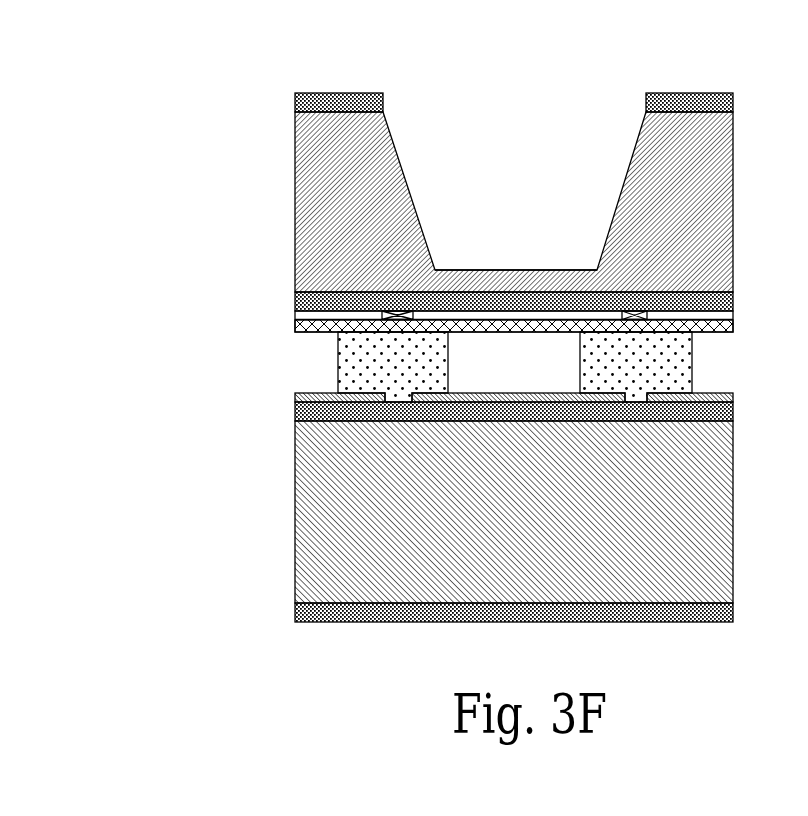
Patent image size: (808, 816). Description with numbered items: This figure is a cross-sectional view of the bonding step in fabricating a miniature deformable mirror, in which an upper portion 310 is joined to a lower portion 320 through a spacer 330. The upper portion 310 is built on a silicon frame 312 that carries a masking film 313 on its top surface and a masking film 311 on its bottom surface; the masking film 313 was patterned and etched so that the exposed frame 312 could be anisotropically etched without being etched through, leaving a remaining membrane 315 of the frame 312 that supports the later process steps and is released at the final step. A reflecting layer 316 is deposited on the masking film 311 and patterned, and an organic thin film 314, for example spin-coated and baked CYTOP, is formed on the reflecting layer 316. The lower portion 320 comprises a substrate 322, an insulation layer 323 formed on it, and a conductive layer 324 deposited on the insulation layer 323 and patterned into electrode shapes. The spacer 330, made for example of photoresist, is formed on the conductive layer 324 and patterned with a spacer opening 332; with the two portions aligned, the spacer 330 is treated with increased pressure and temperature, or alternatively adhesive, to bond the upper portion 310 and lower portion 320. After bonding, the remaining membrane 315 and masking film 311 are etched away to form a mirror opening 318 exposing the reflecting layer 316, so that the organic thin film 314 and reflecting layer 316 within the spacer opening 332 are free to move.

The upper portion 310 is at (433, 224).
The masking film 311 is at (295, 297).
The frame 312 is at (305, 183).
The masking film 313 is at (296, 96).
The organic thin film 314 is at (325, 367).
The remaining membrane 315 is at (467, 282).
The reflecting layer 316 is at (300, 323).
The mirror opening 318 is at (543, 225).
The lower portion 320 is at (433, 507).
The substrate 322 is at (205, 408).
The insulation layer 323 is at (316, 410).
The conductive layer 324 is at (302, 406).
The spacer 330 is at (673, 372).
The spacer opening 332 is at (540, 374).